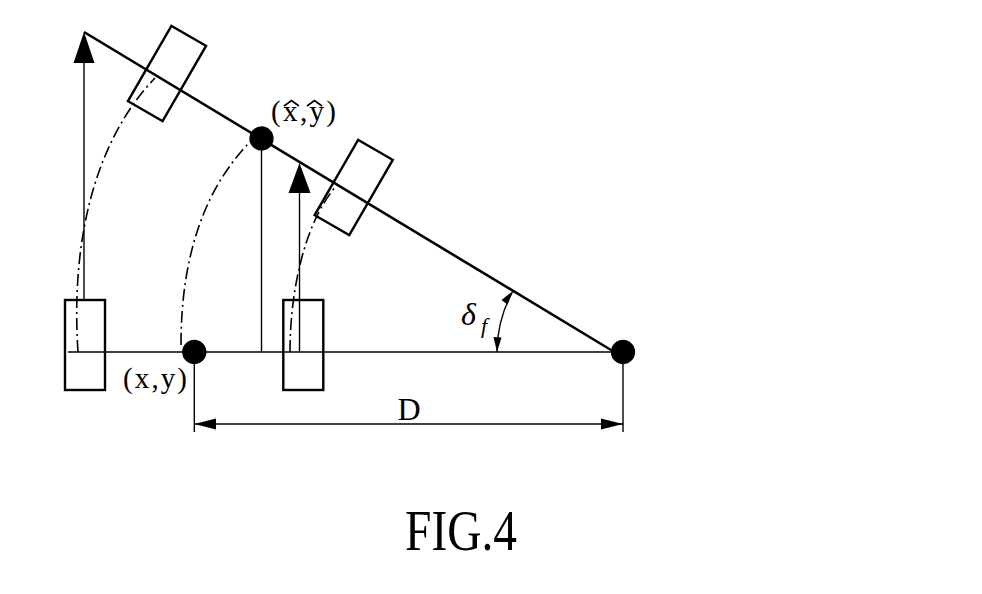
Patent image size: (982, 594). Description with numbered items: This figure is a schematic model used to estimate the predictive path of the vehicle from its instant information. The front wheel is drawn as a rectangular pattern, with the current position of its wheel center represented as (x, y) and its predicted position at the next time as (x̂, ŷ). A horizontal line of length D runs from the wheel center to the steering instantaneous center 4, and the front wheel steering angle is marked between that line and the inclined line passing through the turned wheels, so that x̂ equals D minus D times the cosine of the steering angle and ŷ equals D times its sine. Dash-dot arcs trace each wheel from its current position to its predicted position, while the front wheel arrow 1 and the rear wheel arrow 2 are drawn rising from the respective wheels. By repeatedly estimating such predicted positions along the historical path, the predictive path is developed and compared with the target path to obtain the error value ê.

The front wheel velocity V1 1 is at (337, 265).
The rear wheel velocity V2 2 is at (125, 208).
The steering instantaneous center 4 is at (749, 381).